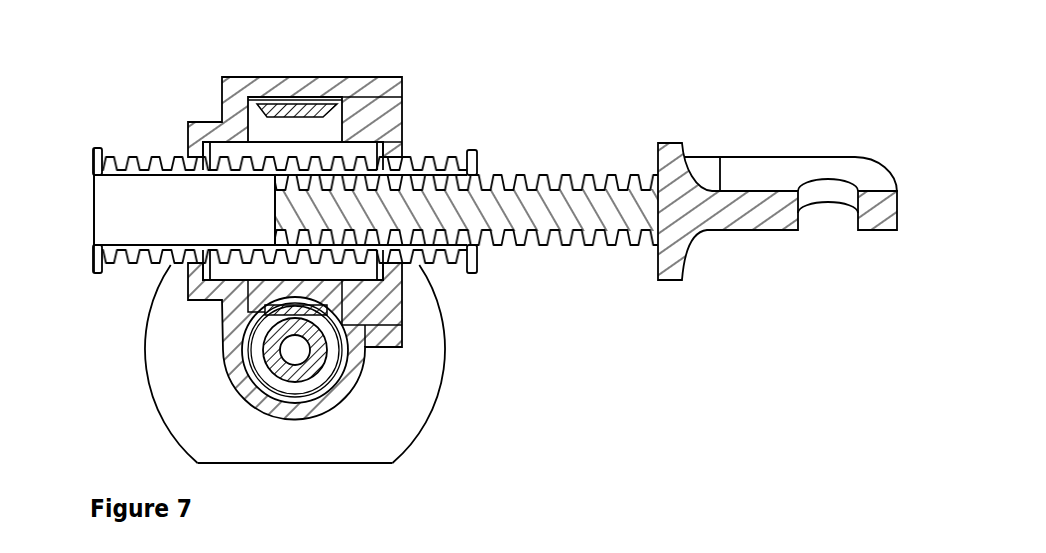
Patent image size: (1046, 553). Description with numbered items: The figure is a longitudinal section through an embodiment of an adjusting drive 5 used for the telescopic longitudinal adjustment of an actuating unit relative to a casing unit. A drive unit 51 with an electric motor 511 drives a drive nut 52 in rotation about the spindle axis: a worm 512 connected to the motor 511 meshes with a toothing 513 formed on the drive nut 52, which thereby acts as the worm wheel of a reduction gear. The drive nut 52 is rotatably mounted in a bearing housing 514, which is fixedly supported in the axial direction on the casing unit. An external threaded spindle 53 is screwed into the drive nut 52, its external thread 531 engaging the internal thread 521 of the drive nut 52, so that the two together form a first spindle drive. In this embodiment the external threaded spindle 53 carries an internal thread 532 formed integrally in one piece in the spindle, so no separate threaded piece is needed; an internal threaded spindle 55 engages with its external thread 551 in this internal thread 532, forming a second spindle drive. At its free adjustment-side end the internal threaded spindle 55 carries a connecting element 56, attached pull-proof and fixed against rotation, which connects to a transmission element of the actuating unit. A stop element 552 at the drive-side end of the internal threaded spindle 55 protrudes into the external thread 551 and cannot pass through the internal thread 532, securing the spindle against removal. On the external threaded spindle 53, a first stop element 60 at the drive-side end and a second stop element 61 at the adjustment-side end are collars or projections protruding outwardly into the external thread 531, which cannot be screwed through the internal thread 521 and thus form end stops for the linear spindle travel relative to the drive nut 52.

The adjusting drive 5 is at (713, 405).
The drive unit 51 is at (418, 397).
The electric motor 511 is at (347, 430).
The worm 512 is at (293, 385).
The drive nut 52 is at (340, 108).
The internal thread 521 is at (302, 138).
The toothing 513 is at (292, 103).
The bearing housing 514 is at (255, 90).
The external threaded spindle 53 is at (150, 266).
The external thread 531 is at (132, 156).
The internal thread 532 is at (430, 252).
The internal threaded spindle 55 is at (548, 205).
The external thread 551 is at (578, 176).
The stop element 552 is at (275, 183).
The connecting element 56 is at (750, 172).
The first stop element 60 is at (98, 148).
The second stop element 61 is at (472, 150).